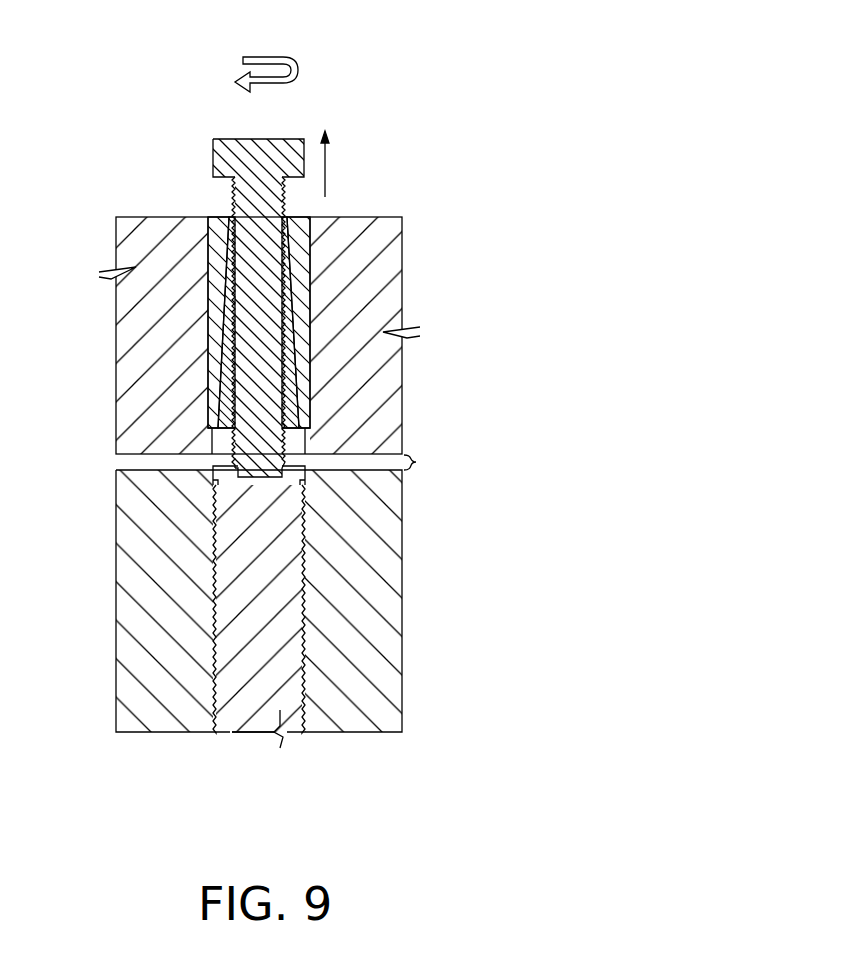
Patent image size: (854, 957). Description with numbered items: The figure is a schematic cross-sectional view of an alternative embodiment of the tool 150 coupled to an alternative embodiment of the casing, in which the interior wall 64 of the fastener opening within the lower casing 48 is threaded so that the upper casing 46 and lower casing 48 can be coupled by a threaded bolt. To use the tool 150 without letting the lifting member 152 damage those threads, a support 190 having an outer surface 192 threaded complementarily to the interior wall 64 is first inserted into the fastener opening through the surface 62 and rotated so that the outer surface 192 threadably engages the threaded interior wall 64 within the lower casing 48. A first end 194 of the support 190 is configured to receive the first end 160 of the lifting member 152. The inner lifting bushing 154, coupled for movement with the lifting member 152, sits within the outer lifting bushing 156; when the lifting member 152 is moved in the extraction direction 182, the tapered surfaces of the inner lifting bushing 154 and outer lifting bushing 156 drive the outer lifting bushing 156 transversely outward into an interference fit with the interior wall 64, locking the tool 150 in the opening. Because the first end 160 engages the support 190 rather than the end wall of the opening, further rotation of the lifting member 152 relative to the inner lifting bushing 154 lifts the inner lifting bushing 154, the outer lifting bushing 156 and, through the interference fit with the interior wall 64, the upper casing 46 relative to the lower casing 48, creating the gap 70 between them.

The tool 150 is at (332, 60).
The lifting member 152 is at (281, 139).
The extraction direction 182 is at (329, 170).
The outer lifting bushing 156 is at (216, 217).
The surface 62 is at (387, 217).
The upper casing 46 is at (373, 286).
The inner lifting bushing 154 is at (227, 392).
The gap 70 is at (430, 465).
The first end 160 is at (243, 482).
The first end 194 is at (273, 480).
The interior wall 64 is at (300, 568).
The lower casing 48 is at (365, 670).
The outer surface 192 is at (228, 713).
The support 190 is at (258, 715).